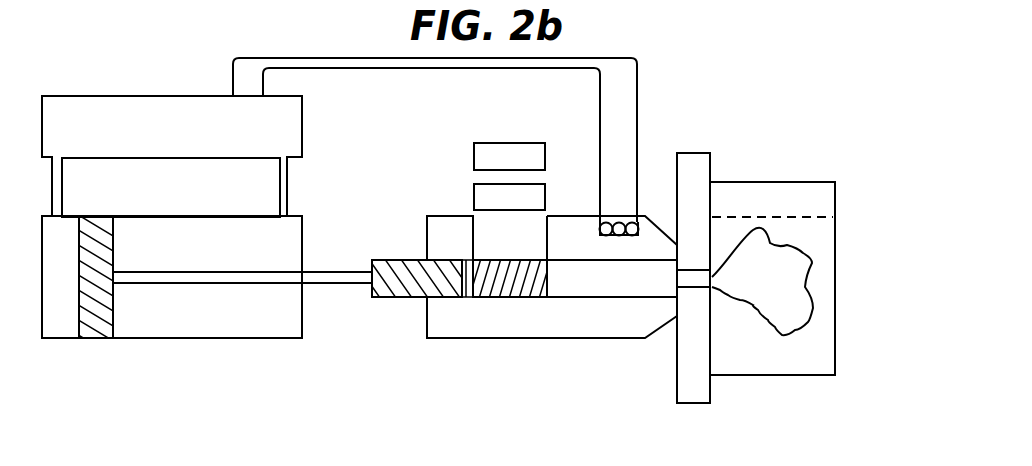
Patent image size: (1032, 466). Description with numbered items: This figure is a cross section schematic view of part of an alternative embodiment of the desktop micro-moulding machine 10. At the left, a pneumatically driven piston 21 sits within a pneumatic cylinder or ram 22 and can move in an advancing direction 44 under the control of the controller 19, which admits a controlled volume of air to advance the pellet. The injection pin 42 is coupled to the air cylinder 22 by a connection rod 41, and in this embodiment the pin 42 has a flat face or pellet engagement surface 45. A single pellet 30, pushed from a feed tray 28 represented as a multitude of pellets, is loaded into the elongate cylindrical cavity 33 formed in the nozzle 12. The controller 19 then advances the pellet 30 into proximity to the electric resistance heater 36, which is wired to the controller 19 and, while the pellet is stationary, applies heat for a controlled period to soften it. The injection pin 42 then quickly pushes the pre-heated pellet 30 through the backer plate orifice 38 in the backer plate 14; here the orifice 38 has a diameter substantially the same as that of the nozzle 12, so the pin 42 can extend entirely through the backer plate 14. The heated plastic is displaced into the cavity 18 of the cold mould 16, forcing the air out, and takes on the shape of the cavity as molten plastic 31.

The desktop micro-moulding machine 10 is at (803, 146).
The nozzle 12 is at (627, 337).
The backer plate 14 is at (693, 390).
The mould 16 is at (828, 197).
The cavity of the mould 18 is at (782, 289).
The controller 19 is at (105, 96).
The pneumatically driven piston 21 is at (92, 310).
The pneumatic cylinder 22 is at (181, 344).
The feed tray 28 is at (459, 171).
The pellet 30 is at (493, 152).
The molten plastic 31 is at (712, 275).
The elongate cylindrical cavity 33 is at (523, 280).
The electric resistance heater 36 is at (617, 225).
The backer plate orifice 38 is at (698, 280).
The connection rod 41 is at (248, 278).
The injection pin 42 is at (407, 297).
The advancing direction 44 is at (113, 247).
The pellet engagement surface 45 is at (463, 278).